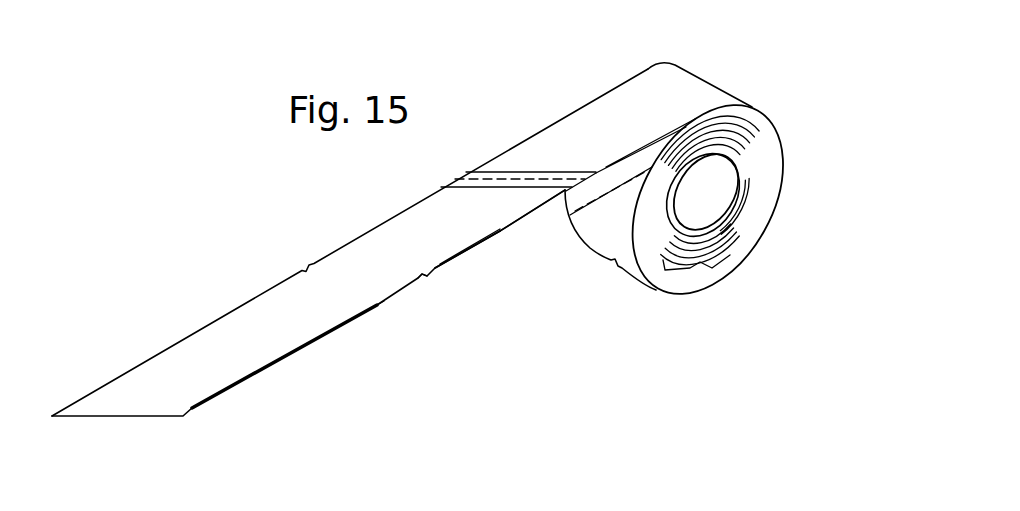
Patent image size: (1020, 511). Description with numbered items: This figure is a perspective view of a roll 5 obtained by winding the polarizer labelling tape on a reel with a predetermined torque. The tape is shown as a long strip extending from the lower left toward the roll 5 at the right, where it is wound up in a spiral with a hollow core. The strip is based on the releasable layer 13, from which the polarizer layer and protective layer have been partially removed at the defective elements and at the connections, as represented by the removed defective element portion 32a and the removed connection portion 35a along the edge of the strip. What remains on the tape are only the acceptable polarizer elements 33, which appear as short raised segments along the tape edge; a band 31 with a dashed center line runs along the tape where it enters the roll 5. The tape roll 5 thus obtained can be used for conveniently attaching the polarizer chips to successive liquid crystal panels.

The roll 5 is at (757, 103).
The releasable layer 13 is at (184, 359).
The fold line portion 31 is at (524, 173).
The acceptable polarizer elements 33 is at (275, 370).
The removed defective element portion 32a is at (375, 303).
The removed connection portion 35a is at (533, 229).